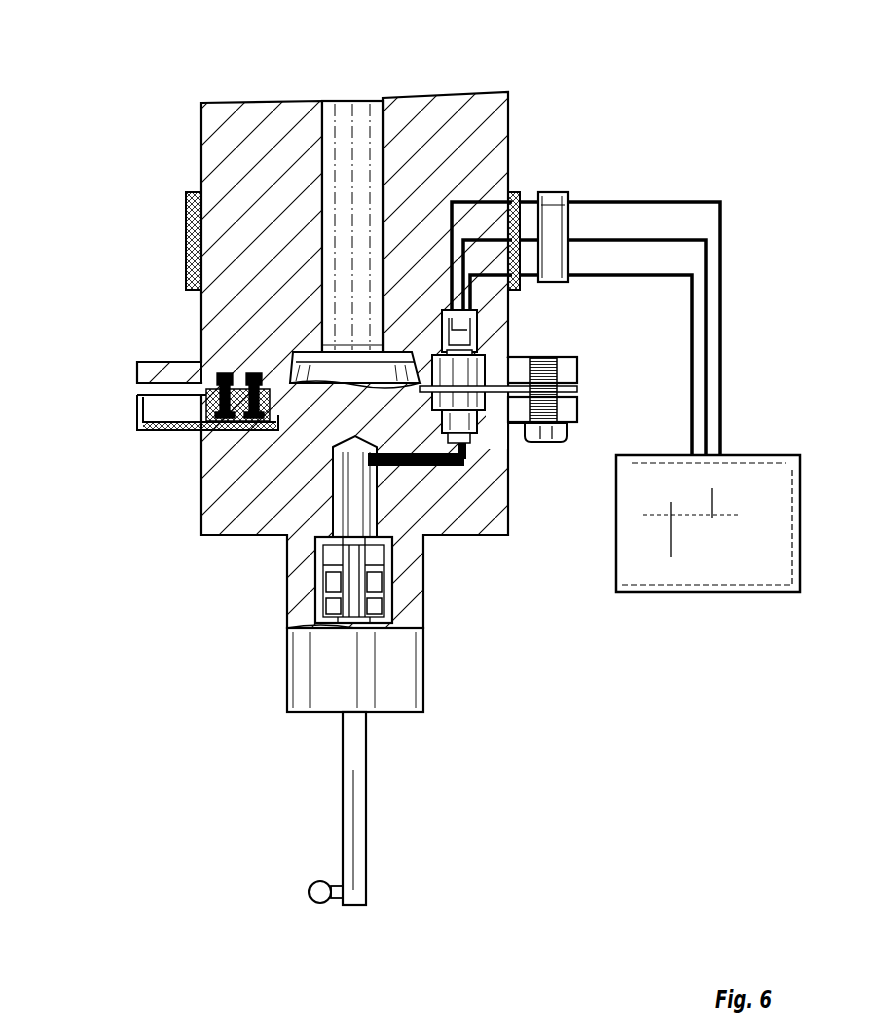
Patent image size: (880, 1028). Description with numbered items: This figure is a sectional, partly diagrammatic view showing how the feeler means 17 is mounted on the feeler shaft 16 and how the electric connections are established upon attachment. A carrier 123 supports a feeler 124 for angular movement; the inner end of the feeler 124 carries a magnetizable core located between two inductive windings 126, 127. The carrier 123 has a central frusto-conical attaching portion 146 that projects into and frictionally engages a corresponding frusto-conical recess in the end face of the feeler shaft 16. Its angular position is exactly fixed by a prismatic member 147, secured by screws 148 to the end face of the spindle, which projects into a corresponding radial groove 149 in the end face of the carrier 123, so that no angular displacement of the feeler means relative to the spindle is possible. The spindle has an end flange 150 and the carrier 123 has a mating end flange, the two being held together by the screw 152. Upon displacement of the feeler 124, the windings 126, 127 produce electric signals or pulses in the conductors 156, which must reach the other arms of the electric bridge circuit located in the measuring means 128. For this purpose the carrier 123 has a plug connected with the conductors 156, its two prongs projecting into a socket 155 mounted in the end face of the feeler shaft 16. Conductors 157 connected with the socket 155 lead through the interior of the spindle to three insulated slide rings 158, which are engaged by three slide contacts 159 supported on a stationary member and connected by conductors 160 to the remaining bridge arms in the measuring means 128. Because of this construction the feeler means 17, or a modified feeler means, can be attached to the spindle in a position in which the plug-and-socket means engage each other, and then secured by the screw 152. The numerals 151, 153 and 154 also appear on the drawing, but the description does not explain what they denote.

The feeler shaft 16 is at (255, 138).
The feeler means 17 is at (335, 670).
The carrier 123 is at (242, 501).
The feeler 124 is at (355, 783).
The inductive winding 126 is at (387, 600).
The inductive winding 127 is at (318, 599).
The measuring means 128 is at (722, 562).
The frusto-conical attaching portion 146 is at (310, 372).
The prismatic member 147 is at (208, 437).
The screws 148 is at (210, 387).
The radial groove 149 is at (188, 417).
The end flange 150 is at (567, 363).
The clamp block 151 is at (567, 408).
The screw 152 is at (557, 428).
The terminal block 153 is at (558, 195).
The conduit 154 is at (473, 402).
The socket 155 is at (467, 370).
The conductors 156 is at (360, 513).
The conductors 157 is at (490, 268).
The insulated slide rings 158 is at (188, 268).
The slide contacts 159 is at (533, 192).
The conductors 160 is at (612, 268).